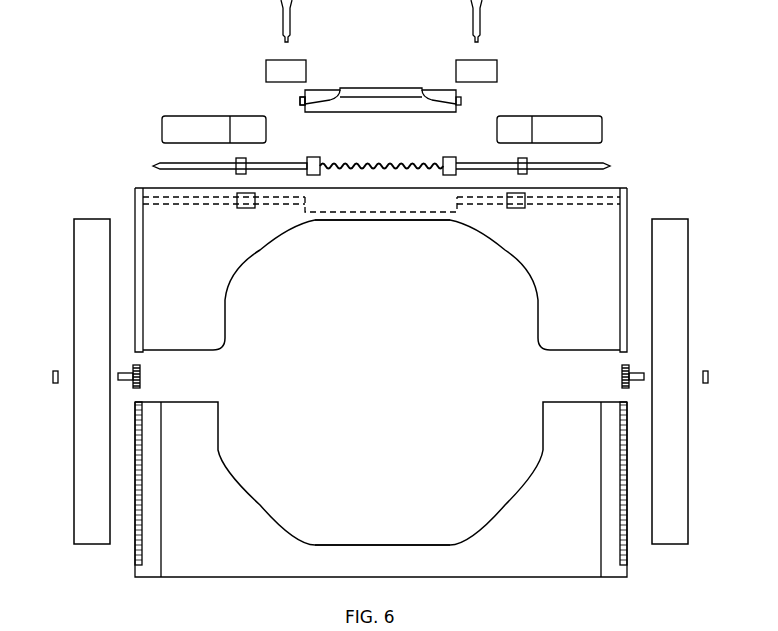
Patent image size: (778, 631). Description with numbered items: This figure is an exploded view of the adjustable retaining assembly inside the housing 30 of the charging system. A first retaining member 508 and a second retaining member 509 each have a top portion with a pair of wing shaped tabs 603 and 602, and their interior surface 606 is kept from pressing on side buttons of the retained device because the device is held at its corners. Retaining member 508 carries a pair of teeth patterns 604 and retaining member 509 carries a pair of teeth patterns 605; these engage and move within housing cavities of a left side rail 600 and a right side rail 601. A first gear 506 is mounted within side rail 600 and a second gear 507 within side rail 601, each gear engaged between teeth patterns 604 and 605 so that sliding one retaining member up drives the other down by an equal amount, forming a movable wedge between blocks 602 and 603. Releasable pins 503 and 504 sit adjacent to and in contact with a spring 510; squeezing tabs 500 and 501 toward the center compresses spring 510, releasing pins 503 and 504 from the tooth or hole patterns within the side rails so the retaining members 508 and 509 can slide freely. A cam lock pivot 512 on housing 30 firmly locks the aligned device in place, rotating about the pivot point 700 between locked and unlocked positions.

The housing 30 is at (655, 70).
The tab 500 is at (250, 122).
The tab 501 is at (518, 125).
The releasable pin 503 is at (165, 163).
The releasable pin 504 is at (597, 163).
The first gear 506 is at (138, 369).
The second gear 507 is at (623, 367).
The first retaining member 508 is at (590, 194).
The second retaining member 509 is at (190, 558).
The spring 510 is at (387, 163).
The cam lock pivot 512 is at (375, 88).
The left side rail 600 is at (85, 492).
The right side rail 601 is at (672, 496).
The wing shaped tab 602 is at (200, 422).
The wing shaped tab 603 is at (198, 319).
The first teeth pattern 604 is at (130, 212).
The second teeth pattern 605 is at (132, 545).
The interior surface 606 is at (467, 228).
The pivot point 700 is at (305, 101).